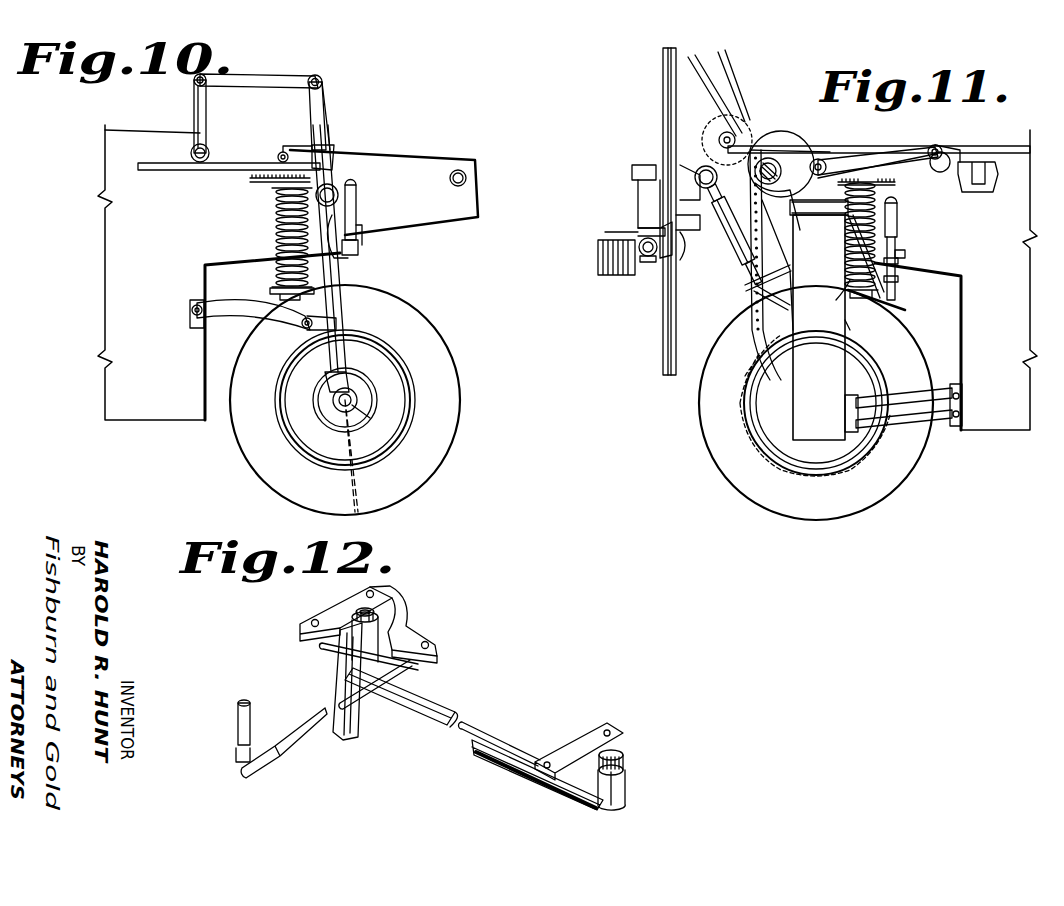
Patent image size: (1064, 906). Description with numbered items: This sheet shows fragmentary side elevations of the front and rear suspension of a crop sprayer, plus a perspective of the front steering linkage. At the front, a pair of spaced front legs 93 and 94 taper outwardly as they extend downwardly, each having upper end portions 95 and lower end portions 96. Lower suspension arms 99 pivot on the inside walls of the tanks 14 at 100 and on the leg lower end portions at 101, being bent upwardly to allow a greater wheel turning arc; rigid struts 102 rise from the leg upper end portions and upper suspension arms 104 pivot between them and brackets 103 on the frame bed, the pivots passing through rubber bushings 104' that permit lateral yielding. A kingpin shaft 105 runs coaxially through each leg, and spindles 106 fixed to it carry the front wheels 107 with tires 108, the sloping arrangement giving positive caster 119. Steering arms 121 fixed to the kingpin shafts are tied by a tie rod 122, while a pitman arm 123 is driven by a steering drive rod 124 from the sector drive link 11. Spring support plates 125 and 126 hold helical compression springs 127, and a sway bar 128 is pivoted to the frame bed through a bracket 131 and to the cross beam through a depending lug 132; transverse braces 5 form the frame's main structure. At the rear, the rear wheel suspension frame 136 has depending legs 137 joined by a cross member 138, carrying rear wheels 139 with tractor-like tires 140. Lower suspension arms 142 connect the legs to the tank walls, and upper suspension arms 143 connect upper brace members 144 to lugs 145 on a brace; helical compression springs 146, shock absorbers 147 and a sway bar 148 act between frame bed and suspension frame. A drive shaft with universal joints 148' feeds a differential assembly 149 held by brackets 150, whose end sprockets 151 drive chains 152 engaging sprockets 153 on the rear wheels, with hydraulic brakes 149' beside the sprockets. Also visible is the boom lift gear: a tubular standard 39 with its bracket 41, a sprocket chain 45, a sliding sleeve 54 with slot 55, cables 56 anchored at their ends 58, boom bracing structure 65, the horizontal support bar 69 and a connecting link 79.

In FIG. 10, the transversely extending rigid braces or pipes 5 is at (470, 178).
In FIG. 11, the transversely extending rigid braces or pipes 5 is at (702, 168).
In FIG. 12, the steering mechanism sector drive link 11 is at (248, 712).
In FIG. 10, the elongated tanks 14 is at (132, 412).
In FIG. 11, the elongated tanks 14 is at (1000, 430).
In FIG. 11, the tubular elongated standard 39 is at (666, 117).
In FIG. 11, the bracket 41 is at (684, 226).
In FIG. 11, the sprocket chain 45 is at (730, 84).
In FIG. 11, the vertically extending sleeves 54 is at (687, 257).
In FIG. 11, the vertically extending slots 55 is at (660, 262).
In FIG. 11, the cables 56 is at (662, 60).
In FIG. 11, the other end of cable 58 is at (640, 230).
In FIG. 11, the bracing structure 65 is at (640, 205).
In FIG. 11, the horizontal support bar 69 is at (603, 238).
In FIG. 11, the connecting link 79 is at (632, 170).
In FIG. 12, the front leg 93 is at (628, 795).
In FIG. 10, the front leg 94 is at (344, 294).
In FIG. 12, the front leg 94 is at (343, 690).
In FIG. 10, the upper end portions 95 is at (334, 183).
In FIG. 12, the upper end portions 95 is at (328, 647).
In FIG. 10, the lower end portions 96 is at (356, 362).
In FIG. 10, the lower suspension arms 99 is at (250, 305).
In FIG. 10, the pivotal connection to tank wall 100 is at (196, 300).
In FIG. 10, the pivotal connection to leg lower end 101 is at (340, 324).
In FIG. 10, the rigid struts 102 is at (326, 118).
In FIG. 10, the brackets 103 is at (195, 118).
In FIG. 10, the upper suspension arms 104 is at (261, 67).
In FIG. 10, the rubber bushings 104' is at (369, 159).
In FIG. 11, the rubber bushings 104' is at (933, 251).
In FIG. 10, the kingpin shaft 105 is at (330, 391).
In FIG. 10, the spindles 106 is at (378, 417).
In FIG. 10, the front wheels 107 is at (395, 396).
In FIG. 10, the tires 108 is at (445, 428).
In FIG. 10, the positive caster 119 is at (352, 472).
In FIG. 12, the steering arms 121 is at (346, 608).
In FIG. 10, the tie rod 122 is at (278, 157).
In FIG. 12, the tie rod 122 is at (468, 724).
In FIG. 10, the pitman arm 123 is at (328, 147).
In FIG. 12, the pitman arm 123 is at (415, 635).
In FIG. 12, the steering drive rod 124 is at (300, 736).
In FIG. 10, the spring support plate 125 is at (277, 288).
In FIG. 10, the spring support plate 126 is at (262, 185).
In FIG. 10, the helical compression springs 127 is at (266, 204).
In FIG. 10, the sway bar 128 is at (358, 188).
In FIG. 10, the bracket 131 is at (360, 232).
In FIG. 10, the depending bracket or lug 132 is at (340, 260).
In FIG. 11, the rear wheel suspension frame 136 is at (840, 306).
In FIG. 11, the legs 137 is at (848, 322).
In FIG. 11, the rigid cross member 138 is at (800, 222).
In FIG. 11, the rear wheels 139 is at (840, 456).
In FIG. 11, the deep tread tractor-like tires 140 is at (905, 465).
In FIG. 11, the lower suspension arms 142 is at (932, 412).
In FIG. 11, the upper suspension arms 143 is at (860, 158).
In FIG. 11, the upper brace members 144 is at (815, 158).
In FIG. 11, the lugs 145 is at (944, 146).
In FIG. 11, the helical compression springs 146 is at (880, 196).
In FIG. 11, the shock absorbers 147 is at (724, 238).
In FIG. 11, the sway bar 148 is at (927, 248).
In FIG. 11, the prime mover drive shaft with universal joints 148' is at (993, 184).
In FIG. 11, the differential assembly 149 is at (778, 165).
In FIG. 11, the hydraulic brakes 149' is at (804, 128).
In FIG. 11, the brackets 150 is at (745, 288).
In FIG. 11, the sprockets 151 is at (772, 178).
In FIG. 11, the drive chains 152 is at (752, 352).
In FIG. 11, the sprockets 153 is at (782, 410).